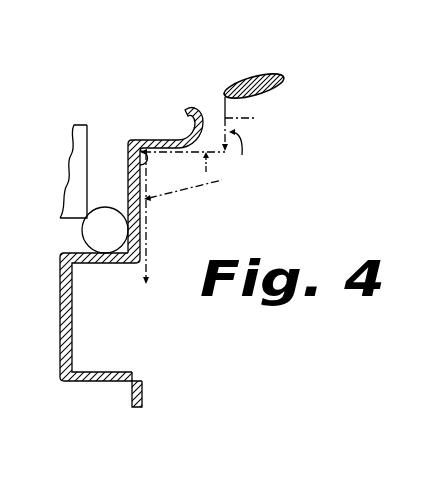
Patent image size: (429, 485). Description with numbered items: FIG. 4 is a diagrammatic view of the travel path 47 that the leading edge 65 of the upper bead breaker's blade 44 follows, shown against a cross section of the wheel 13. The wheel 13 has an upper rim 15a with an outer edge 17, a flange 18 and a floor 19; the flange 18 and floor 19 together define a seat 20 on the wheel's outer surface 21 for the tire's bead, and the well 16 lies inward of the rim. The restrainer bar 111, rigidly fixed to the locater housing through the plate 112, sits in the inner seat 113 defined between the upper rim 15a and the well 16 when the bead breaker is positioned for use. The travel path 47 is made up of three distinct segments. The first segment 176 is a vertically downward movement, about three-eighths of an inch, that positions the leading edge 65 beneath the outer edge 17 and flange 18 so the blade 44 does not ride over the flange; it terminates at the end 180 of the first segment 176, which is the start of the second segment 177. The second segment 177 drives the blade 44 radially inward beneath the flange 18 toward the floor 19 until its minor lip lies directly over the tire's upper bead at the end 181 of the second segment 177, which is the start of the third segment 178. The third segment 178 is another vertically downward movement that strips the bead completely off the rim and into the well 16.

The wheel 13 is at (145, 385).
The well 16 is at (100, 326).
The outer edge 17 is at (188, 108).
The flange 18 is at (157, 140).
The floor 19 is at (131, 196).
The seat 20 is at (131, 141).
The outer surface 21 is at (168, 128).
The blade 44 is at (290, 80).
The travel path 47 is at (236, 157).
The leading edge 65 is at (224, 92).
The restrainer bar 111 is at (117, 237).
The plate 112 is at (72, 177).
The inner seat 113 is at (127, 263).
The upper rim 15a is at (178, 98).
The first segment 176 is at (256, 119).
The second segment 177 is at (178, 153).
The third segment 178 is at (146, 213).
The end of first segment 180 is at (187, 136).
The end of second segment 181 is at (138, 160).